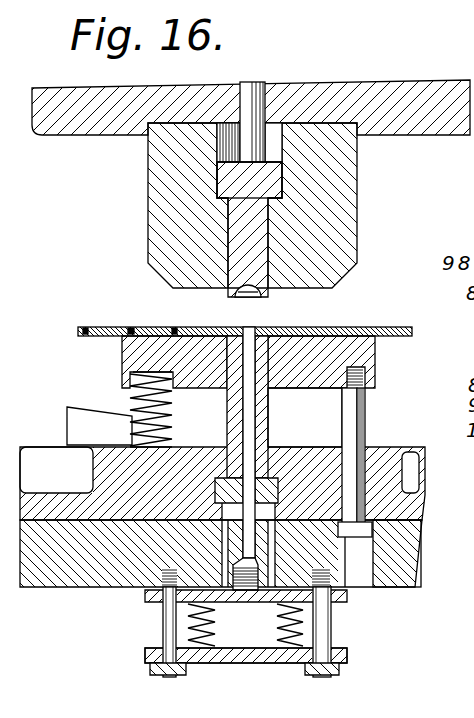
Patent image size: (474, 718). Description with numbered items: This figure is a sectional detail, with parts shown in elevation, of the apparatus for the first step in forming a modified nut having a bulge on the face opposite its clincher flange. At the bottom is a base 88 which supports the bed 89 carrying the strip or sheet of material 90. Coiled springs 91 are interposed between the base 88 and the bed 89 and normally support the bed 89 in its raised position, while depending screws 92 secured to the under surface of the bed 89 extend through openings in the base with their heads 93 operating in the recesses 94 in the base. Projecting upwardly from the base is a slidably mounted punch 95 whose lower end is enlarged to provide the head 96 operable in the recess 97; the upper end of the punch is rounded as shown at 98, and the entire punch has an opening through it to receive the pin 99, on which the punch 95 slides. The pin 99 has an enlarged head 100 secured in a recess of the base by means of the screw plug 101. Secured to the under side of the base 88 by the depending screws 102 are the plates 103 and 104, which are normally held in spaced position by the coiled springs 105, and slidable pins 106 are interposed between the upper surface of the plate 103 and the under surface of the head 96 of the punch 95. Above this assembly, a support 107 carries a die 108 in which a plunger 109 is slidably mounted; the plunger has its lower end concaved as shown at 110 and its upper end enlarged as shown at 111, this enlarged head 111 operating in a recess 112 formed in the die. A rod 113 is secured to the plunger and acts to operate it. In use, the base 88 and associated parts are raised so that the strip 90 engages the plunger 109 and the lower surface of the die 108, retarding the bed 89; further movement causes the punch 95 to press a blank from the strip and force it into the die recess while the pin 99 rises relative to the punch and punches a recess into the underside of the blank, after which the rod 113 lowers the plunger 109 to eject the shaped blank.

The base 88 is at (403, 478).
The bed 89 is at (376, 372).
The strip or sheet of material 90 is at (336, 331).
The coiled springs 91 is at (166, 431).
The depending screws 92 is at (362, 441).
The heads 93 is at (418, 533).
The recesses 94 is at (415, 577).
The punch 95 is at (270, 420).
The head 96 is at (277, 478).
The recess 97 is at (222, 522).
The rounded upper end 98 is at (258, 333).
The pin 99 is at (247, 404).
The enlarged head 100 is at (244, 562).
The screw plug 101 is at (274, 663).
The depending screws 102 is at (333, 609).
The plate 103 is at (152, 608).
The plate 104 is at (246, 663).
The coiled springs 105 is at (302, 634).
The slidable pins 106 is at (366, 560).
The support 107 is at (62, 136).
The die 108 is at (357, 213).
The plunger 109 is at (242, 260).
The concaved lower end 110 is at (244, 288).
The enlarged head 111 is at (237, 182).
The recess 112 is at (279, 126).
The rod 113 is at (262, 70).